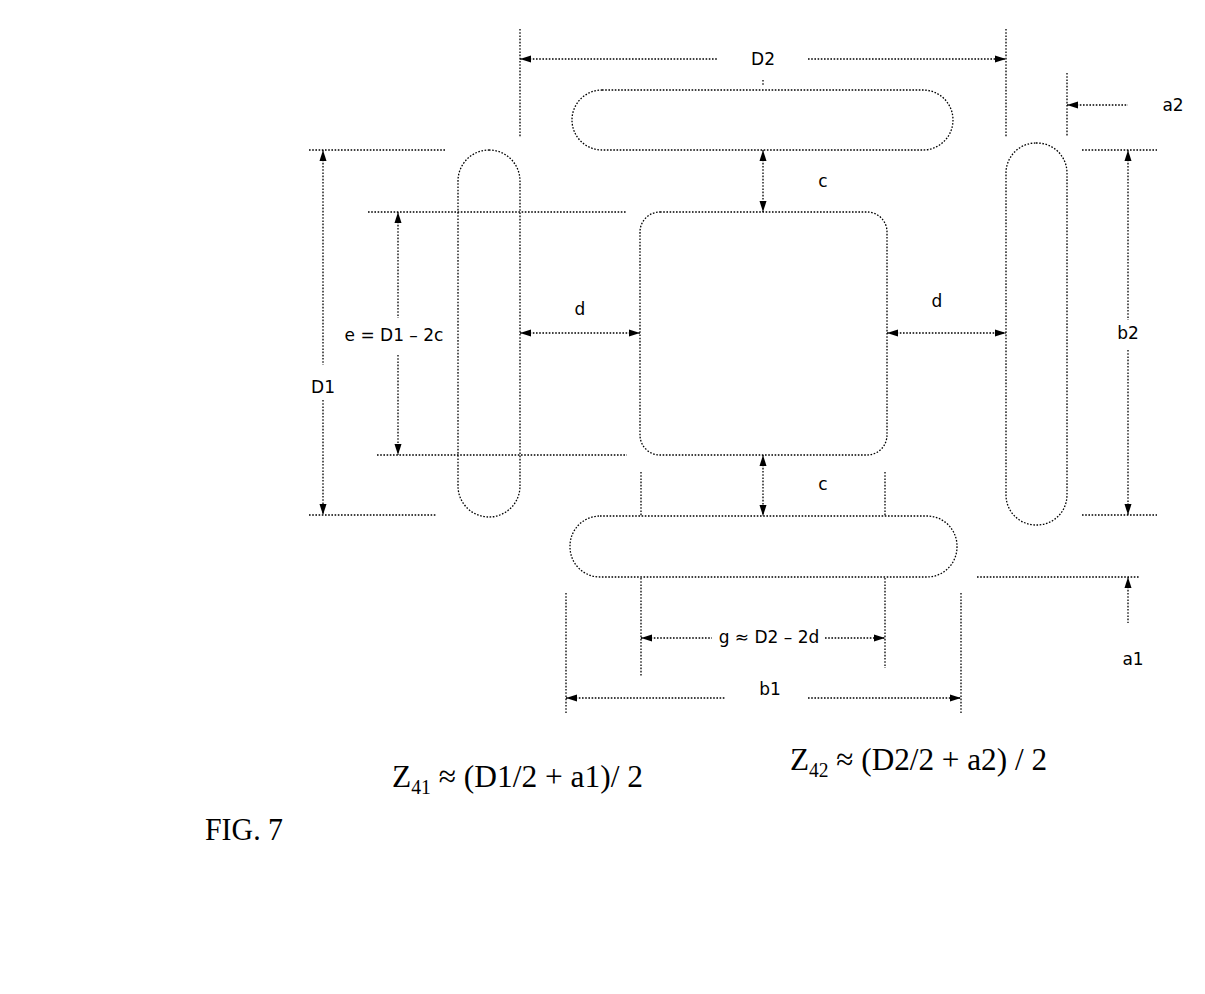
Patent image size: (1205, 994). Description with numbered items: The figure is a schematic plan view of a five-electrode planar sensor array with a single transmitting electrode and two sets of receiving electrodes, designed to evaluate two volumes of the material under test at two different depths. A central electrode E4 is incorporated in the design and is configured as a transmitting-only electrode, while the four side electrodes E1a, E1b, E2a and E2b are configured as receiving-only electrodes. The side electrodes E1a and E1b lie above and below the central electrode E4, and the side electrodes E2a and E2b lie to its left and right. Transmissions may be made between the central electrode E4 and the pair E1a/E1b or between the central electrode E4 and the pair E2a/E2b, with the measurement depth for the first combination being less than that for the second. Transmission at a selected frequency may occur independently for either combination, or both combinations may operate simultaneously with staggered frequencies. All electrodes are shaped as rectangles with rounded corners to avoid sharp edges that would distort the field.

The side electrode E1a is at (762, 120).
The side electrode E1b is at (763, 546).
The side electrode E2a is at (489, 333).
The side electrode E2b is at (1036, 334).
The central electrode E4 is at (763, 333).